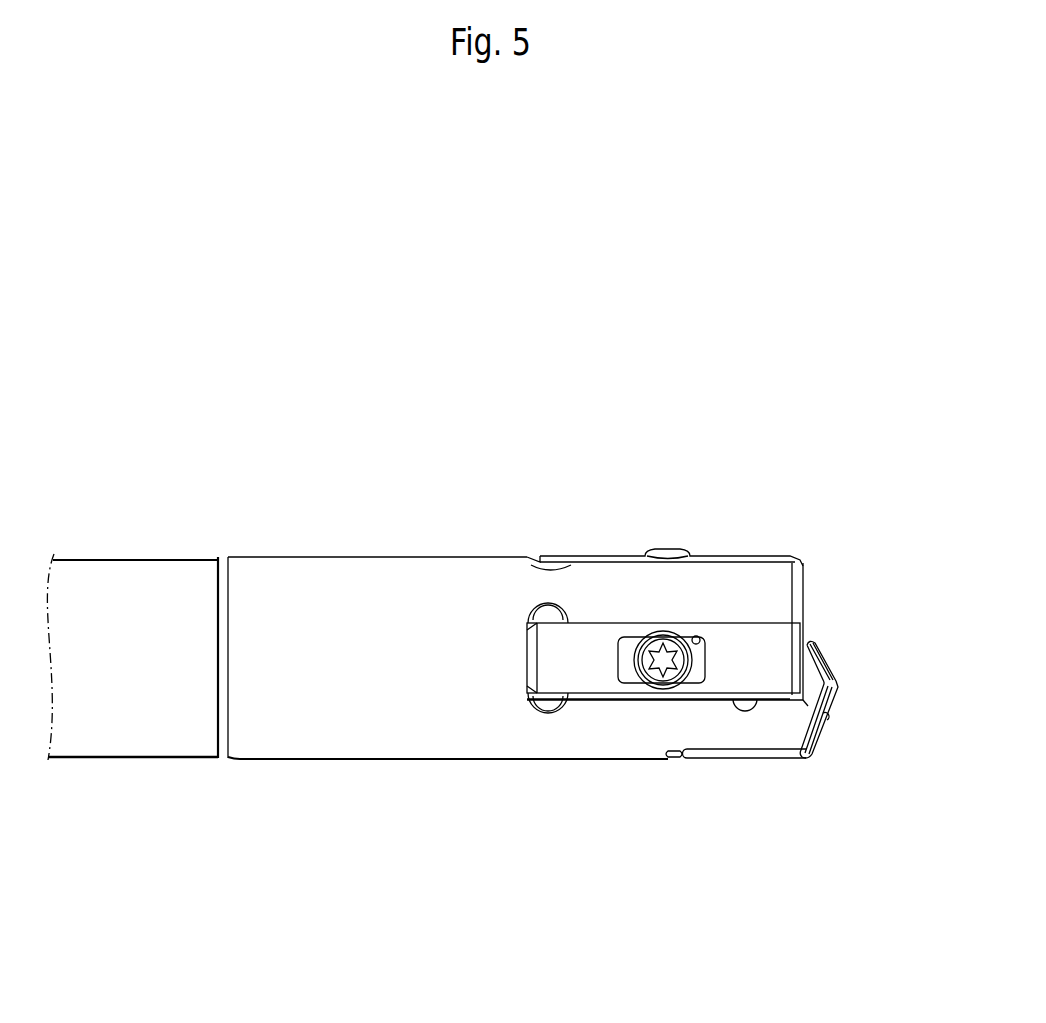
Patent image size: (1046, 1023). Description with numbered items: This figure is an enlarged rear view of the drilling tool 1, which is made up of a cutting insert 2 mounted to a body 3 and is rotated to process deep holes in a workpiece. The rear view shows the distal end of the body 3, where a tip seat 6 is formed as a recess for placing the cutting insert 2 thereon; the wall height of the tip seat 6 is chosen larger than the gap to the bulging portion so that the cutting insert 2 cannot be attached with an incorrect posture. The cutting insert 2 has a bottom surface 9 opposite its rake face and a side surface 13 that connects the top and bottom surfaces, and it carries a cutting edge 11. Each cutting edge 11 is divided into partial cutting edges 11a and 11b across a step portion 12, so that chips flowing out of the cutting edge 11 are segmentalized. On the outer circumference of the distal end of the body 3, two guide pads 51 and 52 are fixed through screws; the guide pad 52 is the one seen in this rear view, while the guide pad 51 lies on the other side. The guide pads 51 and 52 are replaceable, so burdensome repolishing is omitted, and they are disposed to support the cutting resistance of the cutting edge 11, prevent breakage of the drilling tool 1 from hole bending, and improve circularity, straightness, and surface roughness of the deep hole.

The drilling tool 1 is at (536, 642).
The cutting insert 2 is at (816, 767).
The body 3 is at (378, 557).
The tip seat 6 is at (680, 766).
The bottom surface 9 is at (806, 704).
The cutting edge 11 is at (883, 735).
The partial cutting edge 11a is at (833, 670).
The partial cutting edge 11b is at (817, 742).
The step portion 12 is at (829, 718).
The side surface 13 is at (725, 761).
The guide pad 51 is at (742, 556).
The guide pad 52 is at (762, 648).